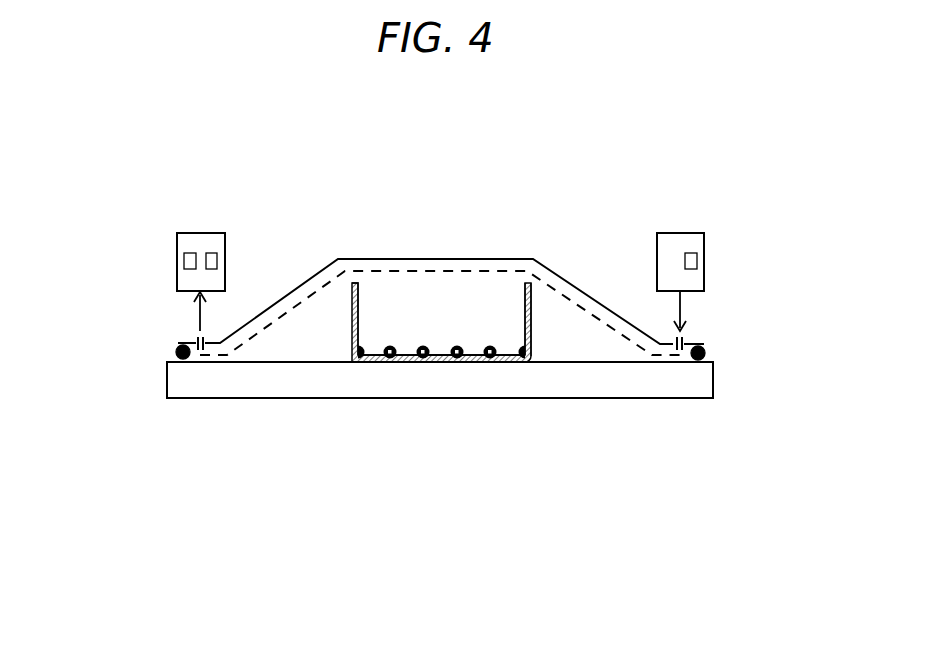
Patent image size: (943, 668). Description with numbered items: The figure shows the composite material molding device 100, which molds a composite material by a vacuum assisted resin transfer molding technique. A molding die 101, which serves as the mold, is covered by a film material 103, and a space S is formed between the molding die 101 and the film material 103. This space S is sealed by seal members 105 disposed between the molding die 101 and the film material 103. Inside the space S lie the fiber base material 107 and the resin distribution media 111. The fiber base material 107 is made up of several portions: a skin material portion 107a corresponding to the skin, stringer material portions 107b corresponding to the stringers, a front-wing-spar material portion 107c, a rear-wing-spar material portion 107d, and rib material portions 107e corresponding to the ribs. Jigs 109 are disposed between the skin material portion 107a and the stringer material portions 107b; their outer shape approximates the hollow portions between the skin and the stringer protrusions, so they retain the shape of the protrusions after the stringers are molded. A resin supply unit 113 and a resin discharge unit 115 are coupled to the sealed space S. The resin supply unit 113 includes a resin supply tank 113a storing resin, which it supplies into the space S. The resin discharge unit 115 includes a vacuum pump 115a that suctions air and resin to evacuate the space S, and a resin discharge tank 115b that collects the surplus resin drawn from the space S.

The composite material molding device 100 is at (270, 114).
The molding die 101 is at (218, 378).
The film material 103 is at (477, 258).
The seal members 105 is at (182, 347).
The fiber base material 107 is at (414, 410).
The skin material portion 107a is at (437, 361).
The stringer material portions 107b is at (483, 335).
The front-wing-spar material portion 107c is at (533, 317).
The rear-wing-spar material portion 107d is at (352, 322).
The rib material portions 107e is at (412, 328).
The jigs 109 is at (490, 358).
The resin distribution media 111 is at (393, 270).
The resin supply unit 113 is at (664, 231).
The resin supply tank 113a is at (690, 253).
The resin discharge unit 115 is at (160, 231).
The vacuum pump 115a is at (212, 253).
The resin discharge tank 115b is at (190, 252).
The space S is at (318, 310).